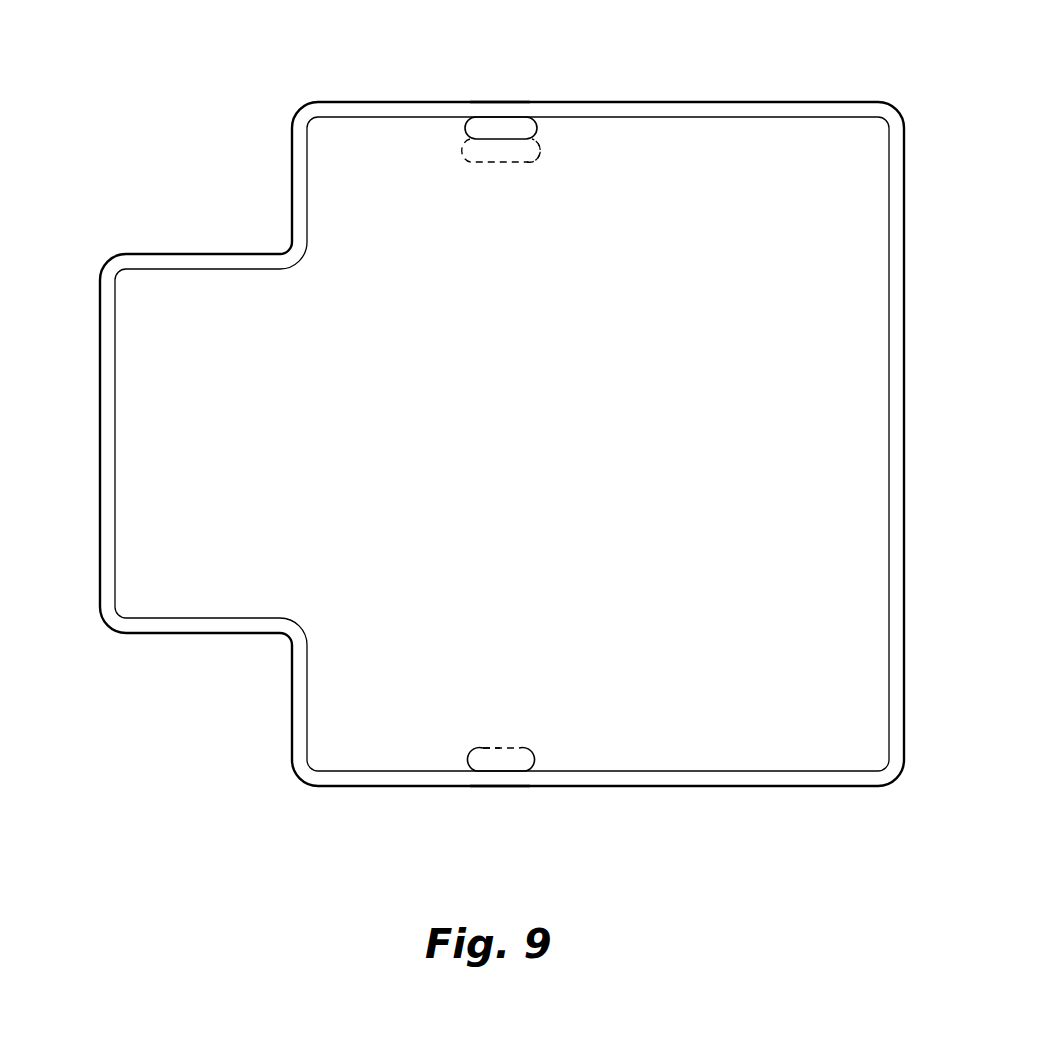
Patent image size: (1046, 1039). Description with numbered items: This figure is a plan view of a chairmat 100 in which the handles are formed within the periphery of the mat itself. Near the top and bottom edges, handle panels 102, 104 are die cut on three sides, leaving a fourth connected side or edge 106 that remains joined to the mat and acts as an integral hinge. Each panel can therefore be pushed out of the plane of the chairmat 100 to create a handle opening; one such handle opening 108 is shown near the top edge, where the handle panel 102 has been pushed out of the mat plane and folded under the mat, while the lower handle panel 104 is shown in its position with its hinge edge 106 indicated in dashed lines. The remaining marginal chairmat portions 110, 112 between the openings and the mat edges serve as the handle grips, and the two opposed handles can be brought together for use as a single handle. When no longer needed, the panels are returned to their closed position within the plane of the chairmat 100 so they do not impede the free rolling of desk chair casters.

The chairmat 100 is at (579, 441).
The handle panel 102 is at (484, 163).
The handle panel 104 is at (530, 750).
The connected side or edge 106 is at (520, 142).
The handle opening 108 is at (462, 127).
The marginal chairmat portion 110 is at (498, 112).
The marginal chairmat portion 112 is at (495, 780).